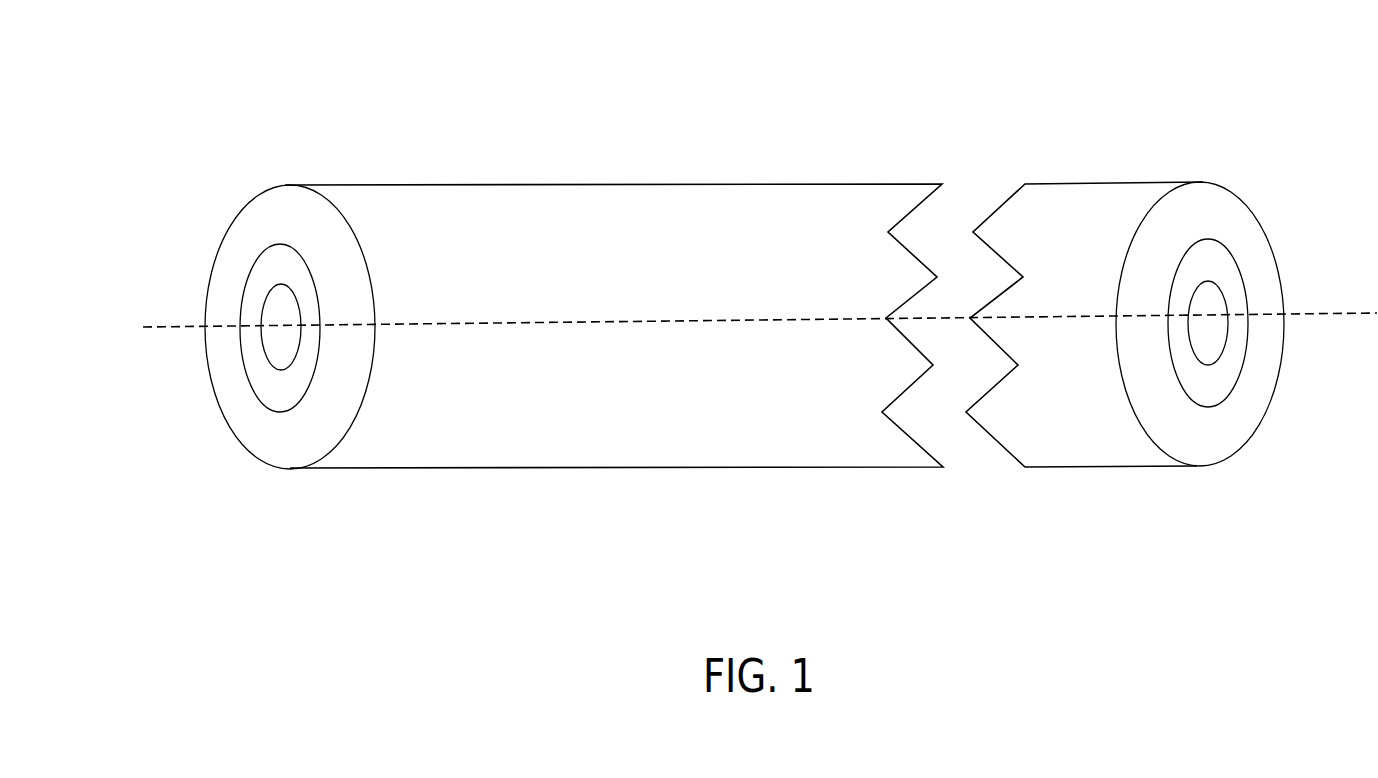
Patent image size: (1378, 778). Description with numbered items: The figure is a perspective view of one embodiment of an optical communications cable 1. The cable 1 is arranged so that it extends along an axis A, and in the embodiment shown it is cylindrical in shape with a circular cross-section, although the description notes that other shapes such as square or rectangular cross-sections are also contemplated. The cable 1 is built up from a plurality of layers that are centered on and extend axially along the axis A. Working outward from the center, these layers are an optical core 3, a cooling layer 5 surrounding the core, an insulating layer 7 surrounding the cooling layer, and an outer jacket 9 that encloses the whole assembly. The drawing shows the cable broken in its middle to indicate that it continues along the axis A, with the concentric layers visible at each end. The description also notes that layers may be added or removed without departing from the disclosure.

The optical communications cable 1 is at (731, 274).
The optical core 3 is at (283, 325).
The cooling layer 5 is at (280, 275).
The insulating layer 7 is at (280, 443).
The jacket 9 is at (525, 218).
The axis A is at (1320, 315).